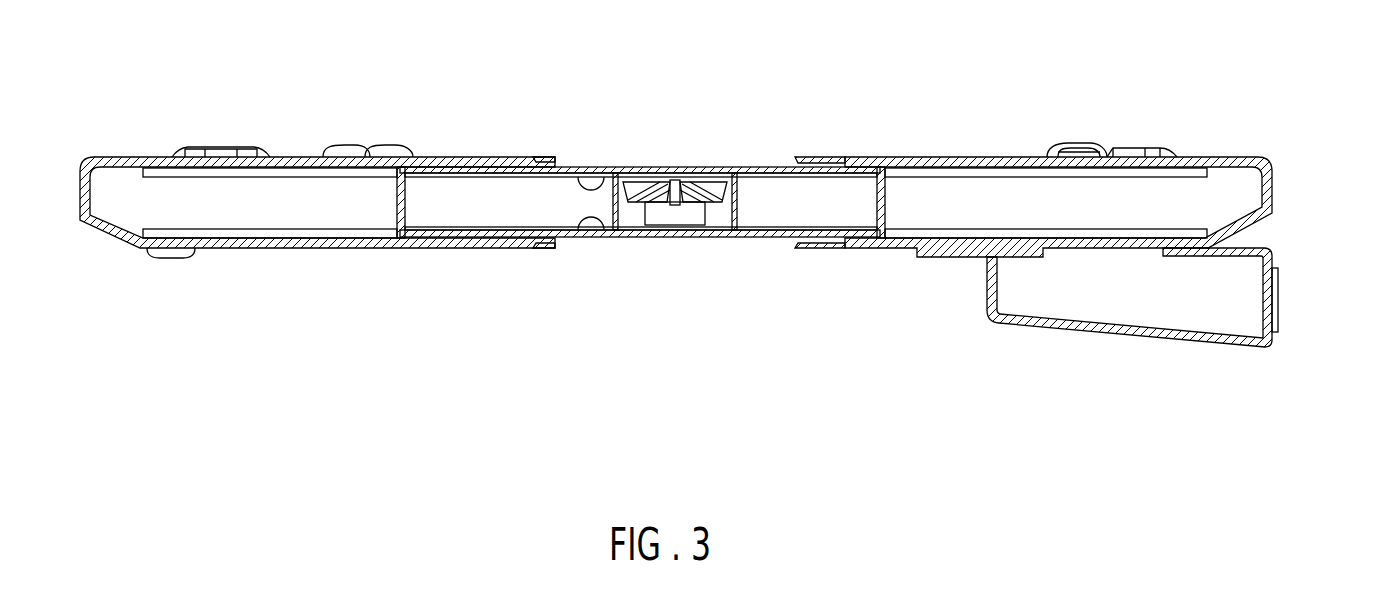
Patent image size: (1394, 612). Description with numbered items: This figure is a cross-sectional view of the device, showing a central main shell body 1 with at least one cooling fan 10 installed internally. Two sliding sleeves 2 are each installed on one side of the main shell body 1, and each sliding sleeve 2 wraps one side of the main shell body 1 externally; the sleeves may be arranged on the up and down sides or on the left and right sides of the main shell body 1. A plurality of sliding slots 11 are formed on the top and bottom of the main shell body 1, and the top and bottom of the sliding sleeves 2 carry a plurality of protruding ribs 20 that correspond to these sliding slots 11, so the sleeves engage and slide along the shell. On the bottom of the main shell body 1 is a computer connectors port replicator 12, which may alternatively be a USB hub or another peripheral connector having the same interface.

The main shell body 1 is at (985, 160).
The sliding sleeve 2 is at (285, 155).
The cooling fan 10 is at (675, 185).
The sliding slot 11 is at (610, 180).
The computer connectors port replicator 12 is at (1273, 283).
The protruding rib 20 is at (167, 172).